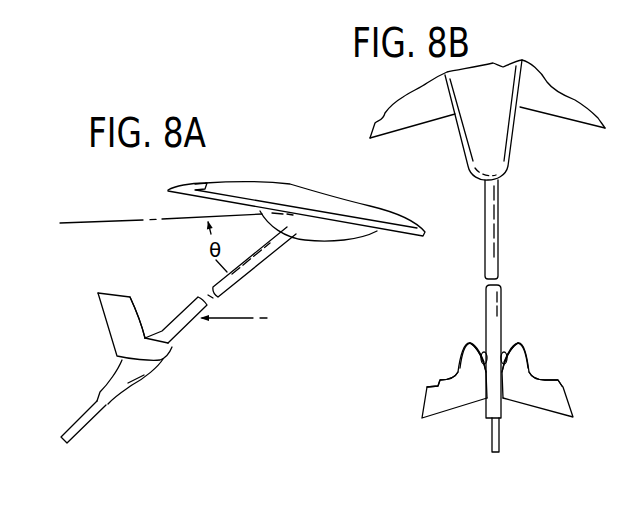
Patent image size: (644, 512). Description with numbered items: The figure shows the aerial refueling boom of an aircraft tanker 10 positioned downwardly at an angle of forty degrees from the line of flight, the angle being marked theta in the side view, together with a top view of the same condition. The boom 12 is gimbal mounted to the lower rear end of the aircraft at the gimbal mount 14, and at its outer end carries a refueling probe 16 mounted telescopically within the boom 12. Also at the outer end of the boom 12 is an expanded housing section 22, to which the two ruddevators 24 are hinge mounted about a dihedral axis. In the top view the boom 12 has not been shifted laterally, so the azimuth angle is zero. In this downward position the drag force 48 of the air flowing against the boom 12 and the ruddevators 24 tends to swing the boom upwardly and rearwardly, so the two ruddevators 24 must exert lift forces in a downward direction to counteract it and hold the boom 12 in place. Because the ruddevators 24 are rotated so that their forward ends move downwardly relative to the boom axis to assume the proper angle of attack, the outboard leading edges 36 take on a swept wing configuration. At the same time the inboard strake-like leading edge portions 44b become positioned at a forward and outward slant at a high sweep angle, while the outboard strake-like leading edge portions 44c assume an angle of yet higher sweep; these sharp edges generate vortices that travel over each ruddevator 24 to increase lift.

In FIG. 8A, the aircraft tanker 10 is at (287, 168).
In FIG. 8B, the aircraft tanker 10 is at (540, 50).
In FIG. 8B, the boom 12 is at (498, 240).
In FIG. 8A, the gimbal mount 14 is at (327, 243).
In FIG. 8A, the refueling probe 16 is at (92, 417).
In FIG. 8B, the refueling probe 16 is at (500, 444).
In FIG. 8A, the expanded housing section 22 is at (143, 377).
In FIG. 8B, the expanded housing section 22 is at (497, 379).
In FIG. 8A, the ruddevator 24 is at (108, 317).
In FIG. 8B, the ruddevator 24 is at (423, 413).
In FIG. 8A, the outboard leading edge 36 is at (136, 308).
In FIG. 8B, the outboard leading edge 36 is at (433, 378).
In FIG. 8B, the inboard edge portion 44b is at (483, 349).
In FIG. 8B, the outboard edge portion 44c is at (461, 360).
In FIG. 8A, the drag force 48 is at (240, 318).